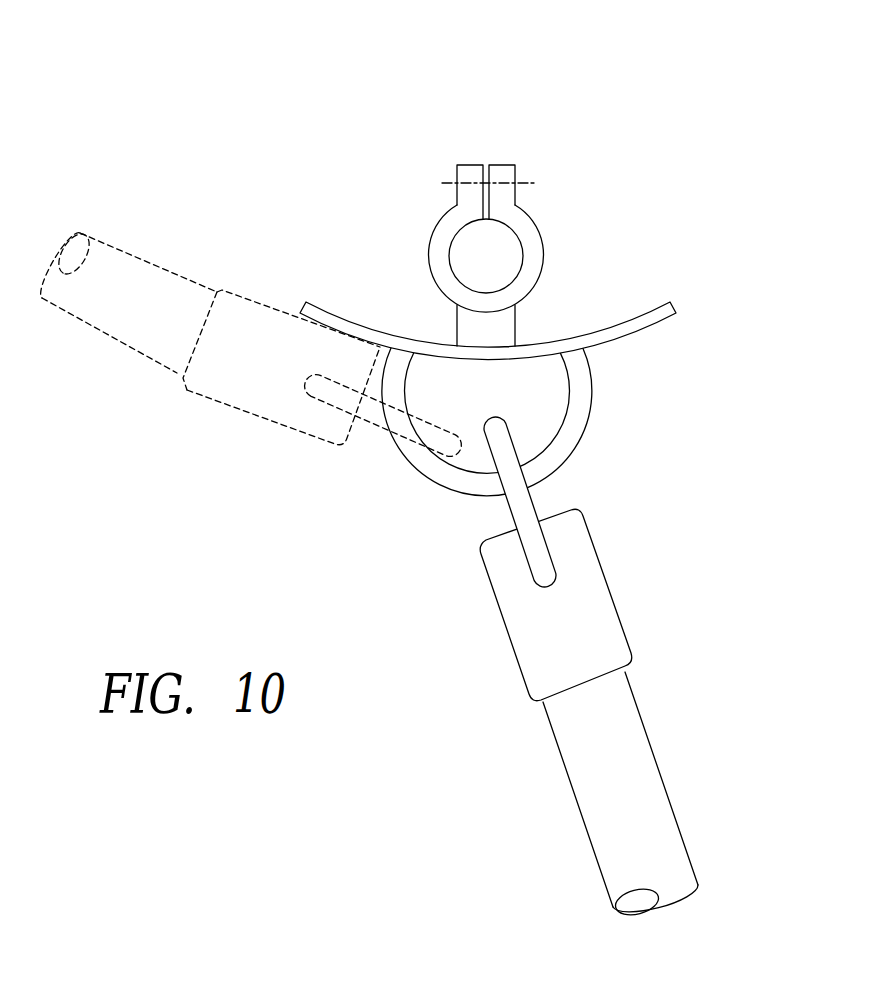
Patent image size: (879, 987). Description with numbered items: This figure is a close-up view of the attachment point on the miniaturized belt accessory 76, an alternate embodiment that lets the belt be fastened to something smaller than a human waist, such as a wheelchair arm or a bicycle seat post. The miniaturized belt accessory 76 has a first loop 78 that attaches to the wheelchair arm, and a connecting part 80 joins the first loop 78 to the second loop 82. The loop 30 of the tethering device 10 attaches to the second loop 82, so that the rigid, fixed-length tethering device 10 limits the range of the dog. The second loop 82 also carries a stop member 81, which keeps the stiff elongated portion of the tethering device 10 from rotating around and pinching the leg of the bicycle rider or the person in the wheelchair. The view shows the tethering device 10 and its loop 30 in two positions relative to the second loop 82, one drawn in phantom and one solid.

The tethering device 10 is at (147, 267).
The loop of the tethering device 30 is at (356, 425).
The miniaturized belt accessory 76 is at (488, 255).
The first loop 78 is at (542, 248).
The connecting part 80 is at (507, 323).
The stop member 81 is at (357, 323).
The second loop 82 is at (582, 393).